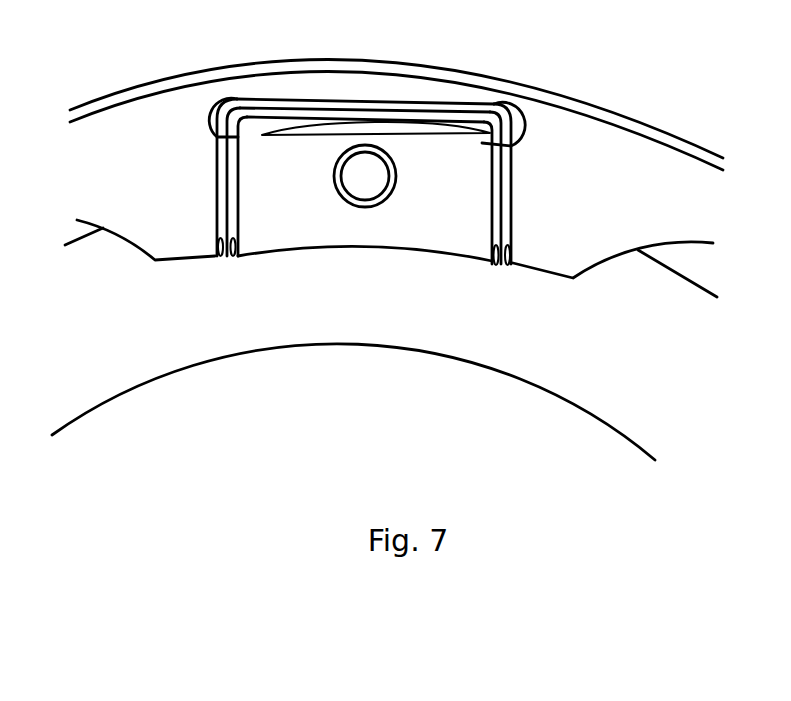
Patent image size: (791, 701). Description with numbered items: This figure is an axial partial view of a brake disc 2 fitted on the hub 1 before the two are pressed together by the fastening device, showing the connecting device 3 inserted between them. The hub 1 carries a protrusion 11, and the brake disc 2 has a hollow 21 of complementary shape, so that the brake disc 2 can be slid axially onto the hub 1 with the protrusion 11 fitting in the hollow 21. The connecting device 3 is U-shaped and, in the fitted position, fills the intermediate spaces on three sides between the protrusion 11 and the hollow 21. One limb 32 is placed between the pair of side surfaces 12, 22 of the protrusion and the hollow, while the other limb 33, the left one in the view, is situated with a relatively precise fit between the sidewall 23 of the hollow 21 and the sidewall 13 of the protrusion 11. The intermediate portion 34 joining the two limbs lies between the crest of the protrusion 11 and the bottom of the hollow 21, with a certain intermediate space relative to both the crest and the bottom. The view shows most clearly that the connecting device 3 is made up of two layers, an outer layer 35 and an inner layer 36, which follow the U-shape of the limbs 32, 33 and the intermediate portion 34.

The hub 1 is at (89, 307).
The brake disc 2 is at (79, 183).
The connecting device 3 is at (557, 104).
The protrusion 11 is at (437, 250).
The side surface of the protrusion 12 is at (492, 268).
The sidewall of the protrusion 13 is at (237, 258).
The hollow 21 is at (356, 332).
The side surface of the hollow 22 is at (507, 268).
The sidewall of the hollow 23 is at (215, 258).
The limb 32 is at (505, 210).
The limb 33 is at (225, 217).
The intermediate portion 34 is at (376, 112).
The outer layer 35 is at (290, 108).
The inner layer 36 is at (312, 118).